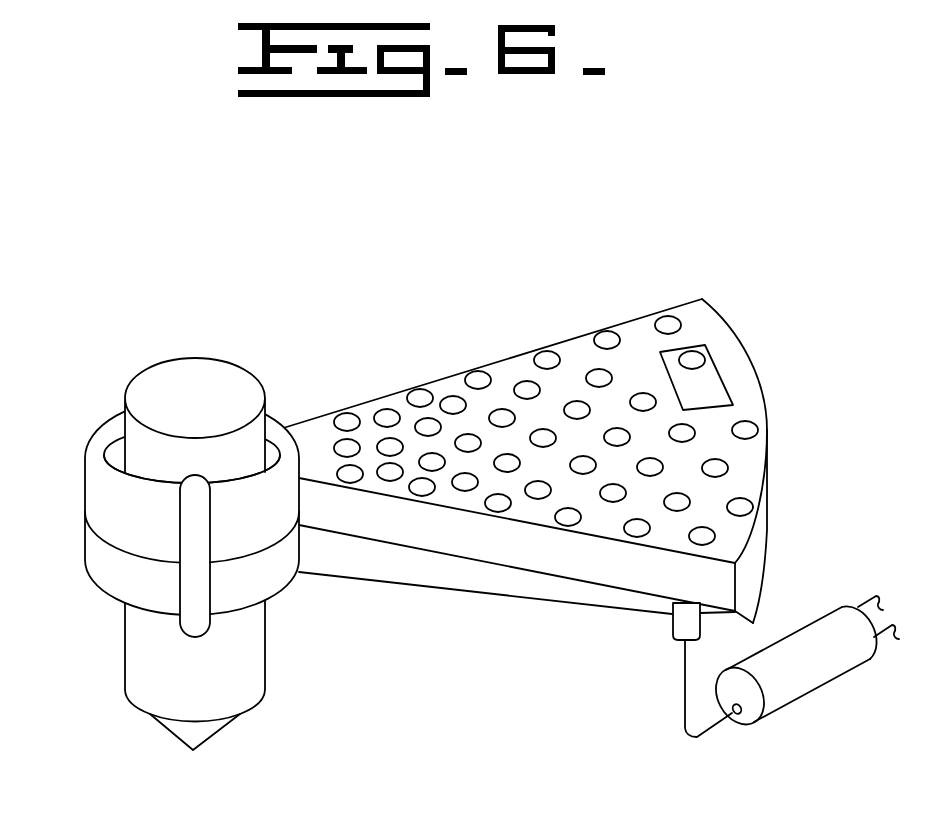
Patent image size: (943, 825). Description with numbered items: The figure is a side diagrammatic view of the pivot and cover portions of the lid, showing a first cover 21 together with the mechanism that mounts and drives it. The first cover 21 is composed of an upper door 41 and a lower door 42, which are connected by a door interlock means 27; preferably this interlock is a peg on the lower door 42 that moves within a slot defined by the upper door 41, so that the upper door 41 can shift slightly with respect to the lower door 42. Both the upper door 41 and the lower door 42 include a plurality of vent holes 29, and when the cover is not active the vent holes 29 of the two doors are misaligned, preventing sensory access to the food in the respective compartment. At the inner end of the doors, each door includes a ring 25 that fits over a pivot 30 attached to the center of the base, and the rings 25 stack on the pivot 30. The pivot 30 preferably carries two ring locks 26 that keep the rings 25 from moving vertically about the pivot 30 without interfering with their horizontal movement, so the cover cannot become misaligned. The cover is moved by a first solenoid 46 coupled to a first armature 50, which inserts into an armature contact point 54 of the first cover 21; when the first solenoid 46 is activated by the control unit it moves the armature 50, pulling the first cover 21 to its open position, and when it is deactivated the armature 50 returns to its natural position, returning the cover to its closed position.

The first cover 21 is at (372, 621).
The ring 25 is at (84, 481).
The ring lock 26 is at (190, 588).
The door interlock means 27 is at (725, 356).
The vent holes 29 is at (592, 347).
The pivot 30 is at (190, 357).
The upper door 41 is at (505, 550).
The lower door 42 is at (760, 573).
The first solenoid 46 is at (810, 679).
The first armature 50 is at (683, 718).
The armature contact point 54 is at (670, 618).